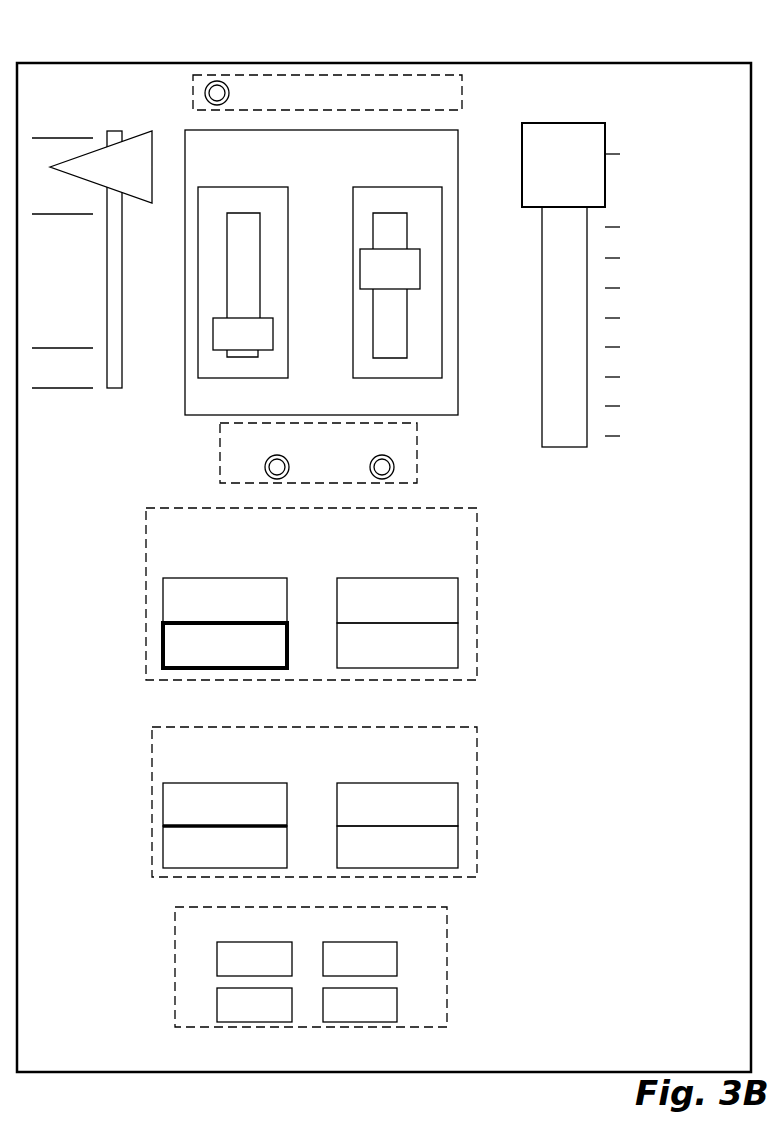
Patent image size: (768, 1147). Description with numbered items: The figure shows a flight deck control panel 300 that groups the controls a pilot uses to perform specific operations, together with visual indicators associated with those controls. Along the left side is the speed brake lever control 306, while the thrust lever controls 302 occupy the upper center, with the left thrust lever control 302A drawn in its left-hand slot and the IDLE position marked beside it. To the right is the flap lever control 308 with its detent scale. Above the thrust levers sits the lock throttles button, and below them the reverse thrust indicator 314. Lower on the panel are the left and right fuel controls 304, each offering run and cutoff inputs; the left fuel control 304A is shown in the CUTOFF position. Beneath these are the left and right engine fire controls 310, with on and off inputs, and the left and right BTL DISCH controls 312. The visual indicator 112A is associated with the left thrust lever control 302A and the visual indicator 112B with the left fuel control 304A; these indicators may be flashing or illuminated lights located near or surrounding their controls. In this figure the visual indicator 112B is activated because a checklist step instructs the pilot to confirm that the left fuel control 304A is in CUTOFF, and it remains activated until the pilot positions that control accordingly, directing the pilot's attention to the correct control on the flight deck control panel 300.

The flight deck control panel 300 is at (237, 61).
The speed brake lever control 306 is at (165, 124).
The engine fire controls 310 is at (460, 96).
The thrust lever controls 302 is at (314, 267).
The visual indicator 112A is at (209, 304).
The left thrust lever control 302A is at (220, 333).
The reverse thrust indicator 314 is at (410, 459).
The flap lever control 308 is at (566, 127).
The fuel controls 304 is at (300, 602).
The visual indicator 112B is at (177, 642).
The left fuel control 304A is at (178, 655).
The BTL DISCH controls 312 is at (440, 1000).